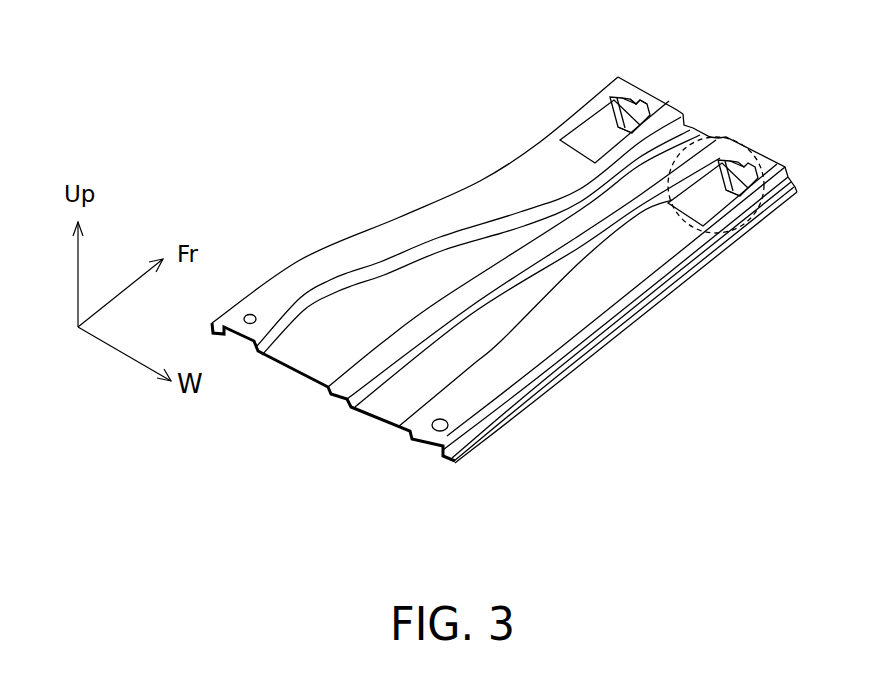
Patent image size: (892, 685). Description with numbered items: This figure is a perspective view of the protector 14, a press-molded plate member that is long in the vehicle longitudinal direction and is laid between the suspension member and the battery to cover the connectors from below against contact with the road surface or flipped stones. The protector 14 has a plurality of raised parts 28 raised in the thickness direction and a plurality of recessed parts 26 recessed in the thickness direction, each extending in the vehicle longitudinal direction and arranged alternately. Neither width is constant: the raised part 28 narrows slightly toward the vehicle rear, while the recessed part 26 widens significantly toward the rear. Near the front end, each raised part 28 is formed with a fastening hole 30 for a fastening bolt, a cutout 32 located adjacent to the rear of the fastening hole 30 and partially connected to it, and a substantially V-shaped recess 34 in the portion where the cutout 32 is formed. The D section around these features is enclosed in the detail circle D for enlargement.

The protector 14 is at (496, 112).
The recessed part 26 is at (316, 355).
The raised part 28 is at (427, 215).
The fastening hole 30 is at (644, 100).
The cutout 32 is at (613, 95).
The recess 34 is at (597, 138).
The D section D is at (757, 143).